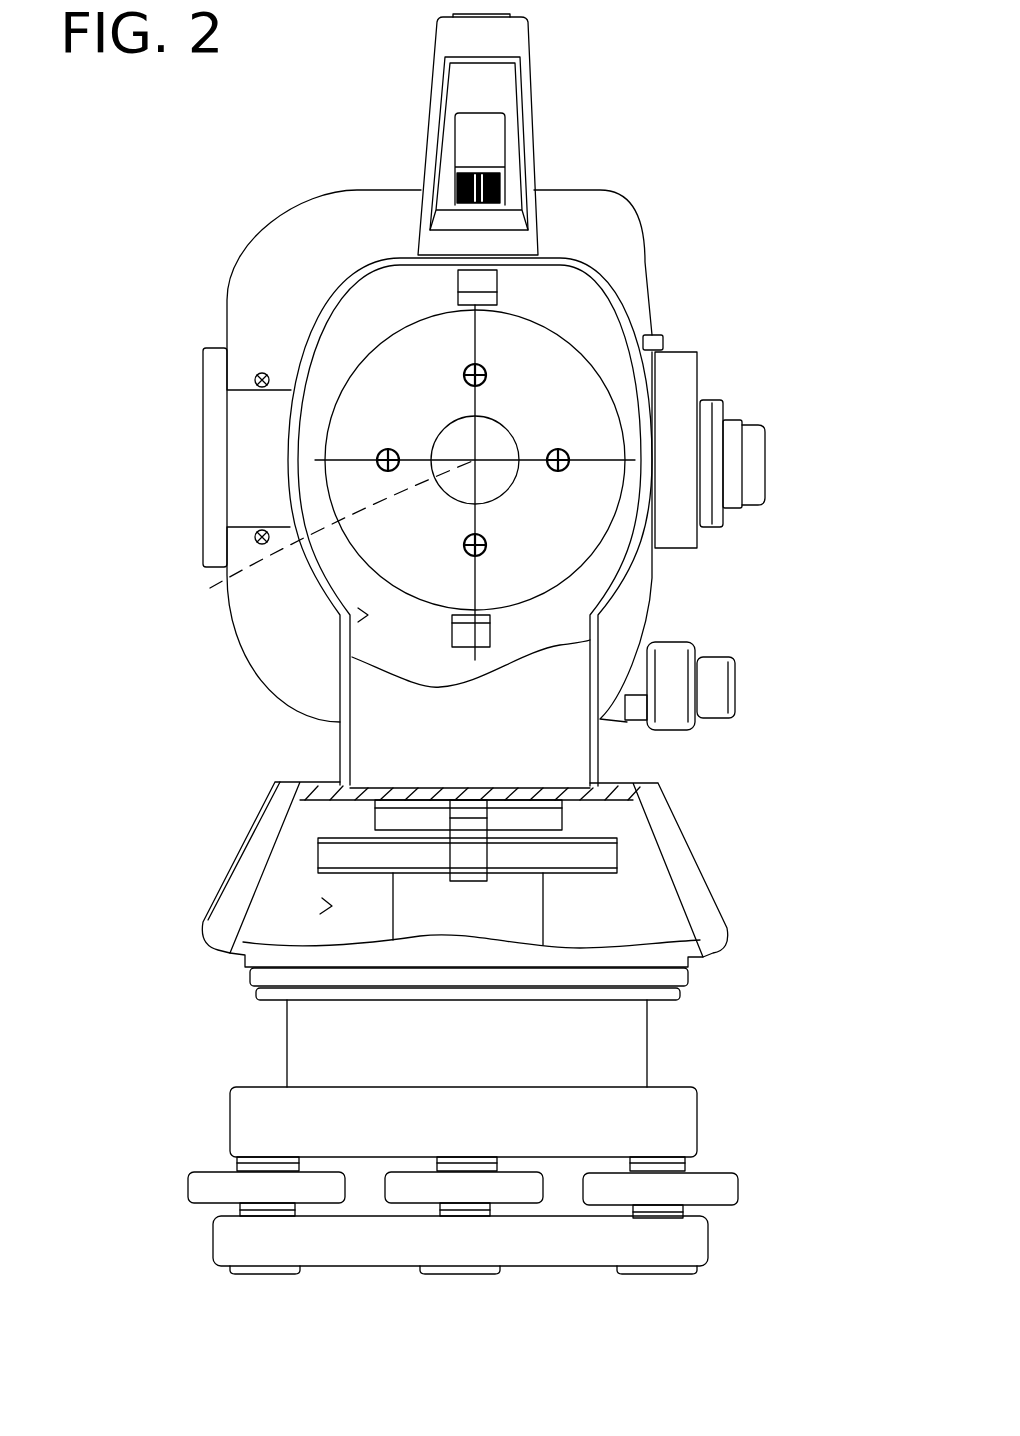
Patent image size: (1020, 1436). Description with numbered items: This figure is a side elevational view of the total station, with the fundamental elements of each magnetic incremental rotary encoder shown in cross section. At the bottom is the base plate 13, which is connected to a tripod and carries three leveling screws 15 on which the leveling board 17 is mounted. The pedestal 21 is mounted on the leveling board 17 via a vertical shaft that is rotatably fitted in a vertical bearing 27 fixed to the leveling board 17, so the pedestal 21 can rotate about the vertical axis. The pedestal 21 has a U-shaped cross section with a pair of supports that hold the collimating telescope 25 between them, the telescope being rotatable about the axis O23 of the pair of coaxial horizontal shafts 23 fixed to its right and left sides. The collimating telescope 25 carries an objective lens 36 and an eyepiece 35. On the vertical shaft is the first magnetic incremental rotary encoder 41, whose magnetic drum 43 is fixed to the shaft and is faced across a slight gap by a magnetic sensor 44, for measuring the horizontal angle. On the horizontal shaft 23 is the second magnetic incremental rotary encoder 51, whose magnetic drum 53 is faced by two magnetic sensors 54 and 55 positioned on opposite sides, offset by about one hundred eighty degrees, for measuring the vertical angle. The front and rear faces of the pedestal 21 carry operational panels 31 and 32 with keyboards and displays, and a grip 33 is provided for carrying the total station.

The base plate 13 is at (357, 1245).
The leveling screws 15 is at (203, 1185).
The leveling board 17 is at (665, 1125).
The pedestal 21 is at (606, 272).
The horizontal shafts 23 is at (500, 440).
The collimating telescope 25 is at (348, 235).
The vertical bearing 27 is at (470, 862).
The operational panel 31 is at (680, 800).
The operational panel 32 is at (256, 821).
The grip 33 is at (500, 52).
The eyepiece 35 is at (762, 472).
The objective lens 36 is at (204, 442).
The first magnetic incremental rotary encoder 41 is at (331, 906).
The magnetic drum 43 is at (600, 862).
The magnetic sensor 44 is at (512, 908).
The second magnetic incremental rotary encoder 51 is at (367, 615).
The magnetic drum 53 is at (548, 530).
The magnetic sensor 54 is at (490, 276).
The magnetic sensor 55 is at (490, 637).
The optical axis center O23 is at (210, 588).